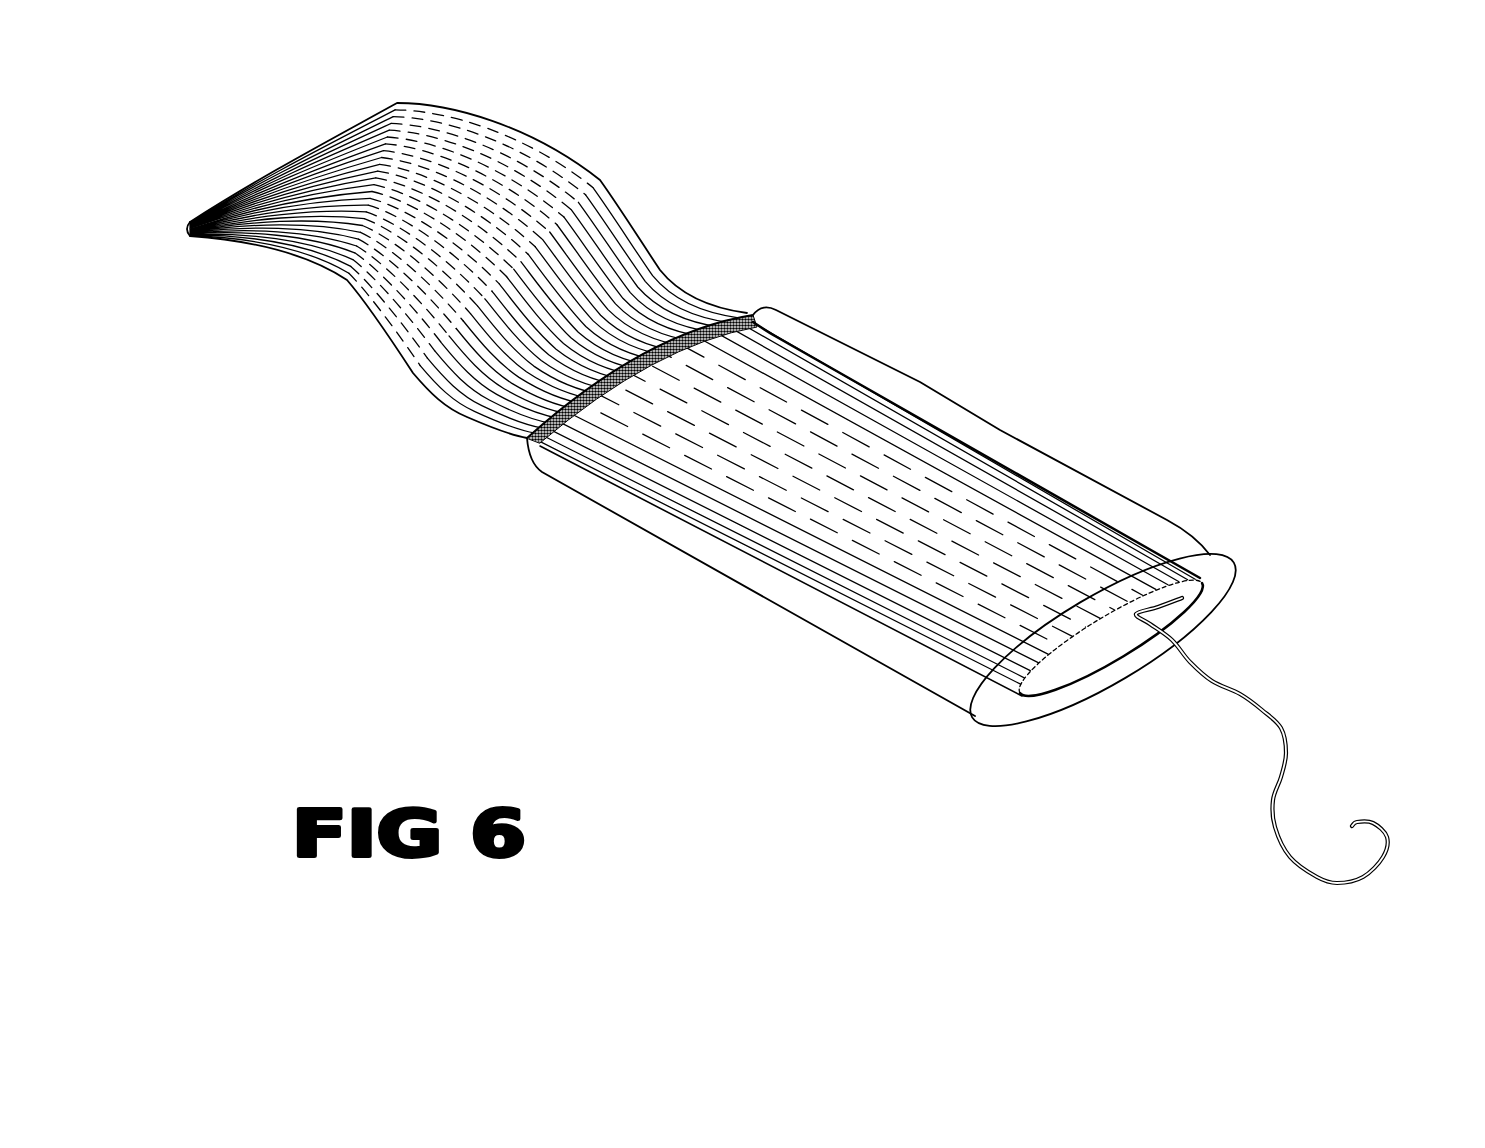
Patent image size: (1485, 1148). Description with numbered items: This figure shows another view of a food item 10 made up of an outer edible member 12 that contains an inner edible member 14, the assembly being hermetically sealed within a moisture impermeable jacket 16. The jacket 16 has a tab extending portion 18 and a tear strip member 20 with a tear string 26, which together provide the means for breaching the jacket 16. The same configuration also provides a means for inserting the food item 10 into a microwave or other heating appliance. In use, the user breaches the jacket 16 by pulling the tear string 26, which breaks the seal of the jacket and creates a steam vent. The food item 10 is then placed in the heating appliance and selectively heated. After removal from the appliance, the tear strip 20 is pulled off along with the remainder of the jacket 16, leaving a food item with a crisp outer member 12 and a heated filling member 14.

The food item 10 is at (1176, 488).
The outer edible member 12 is at (918, 381).
The inner edible member 14 is at (1187, 602).
The moisture impermeable jacket 16 is at (727, 510).
The tab extending portion 18 is at (447, 382).
The tear strip member 20 is at (1065, 648).
The tear string 26 is at (1283, 730).